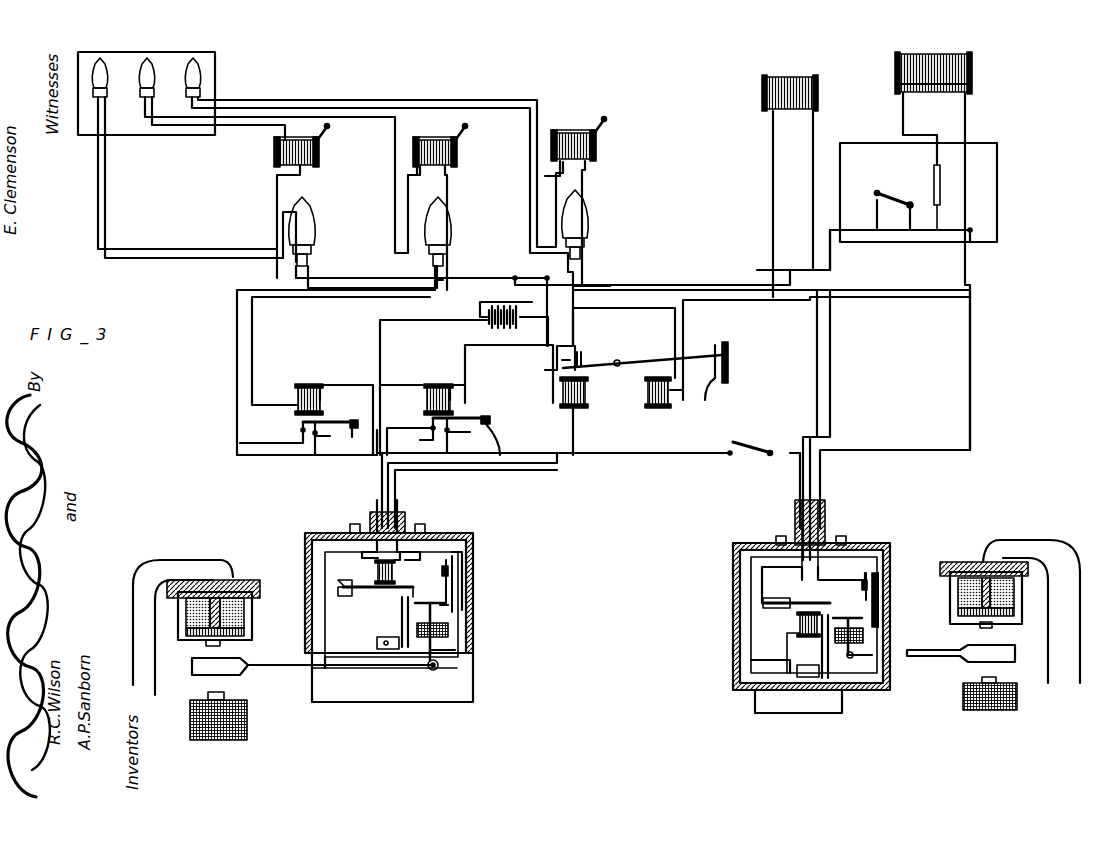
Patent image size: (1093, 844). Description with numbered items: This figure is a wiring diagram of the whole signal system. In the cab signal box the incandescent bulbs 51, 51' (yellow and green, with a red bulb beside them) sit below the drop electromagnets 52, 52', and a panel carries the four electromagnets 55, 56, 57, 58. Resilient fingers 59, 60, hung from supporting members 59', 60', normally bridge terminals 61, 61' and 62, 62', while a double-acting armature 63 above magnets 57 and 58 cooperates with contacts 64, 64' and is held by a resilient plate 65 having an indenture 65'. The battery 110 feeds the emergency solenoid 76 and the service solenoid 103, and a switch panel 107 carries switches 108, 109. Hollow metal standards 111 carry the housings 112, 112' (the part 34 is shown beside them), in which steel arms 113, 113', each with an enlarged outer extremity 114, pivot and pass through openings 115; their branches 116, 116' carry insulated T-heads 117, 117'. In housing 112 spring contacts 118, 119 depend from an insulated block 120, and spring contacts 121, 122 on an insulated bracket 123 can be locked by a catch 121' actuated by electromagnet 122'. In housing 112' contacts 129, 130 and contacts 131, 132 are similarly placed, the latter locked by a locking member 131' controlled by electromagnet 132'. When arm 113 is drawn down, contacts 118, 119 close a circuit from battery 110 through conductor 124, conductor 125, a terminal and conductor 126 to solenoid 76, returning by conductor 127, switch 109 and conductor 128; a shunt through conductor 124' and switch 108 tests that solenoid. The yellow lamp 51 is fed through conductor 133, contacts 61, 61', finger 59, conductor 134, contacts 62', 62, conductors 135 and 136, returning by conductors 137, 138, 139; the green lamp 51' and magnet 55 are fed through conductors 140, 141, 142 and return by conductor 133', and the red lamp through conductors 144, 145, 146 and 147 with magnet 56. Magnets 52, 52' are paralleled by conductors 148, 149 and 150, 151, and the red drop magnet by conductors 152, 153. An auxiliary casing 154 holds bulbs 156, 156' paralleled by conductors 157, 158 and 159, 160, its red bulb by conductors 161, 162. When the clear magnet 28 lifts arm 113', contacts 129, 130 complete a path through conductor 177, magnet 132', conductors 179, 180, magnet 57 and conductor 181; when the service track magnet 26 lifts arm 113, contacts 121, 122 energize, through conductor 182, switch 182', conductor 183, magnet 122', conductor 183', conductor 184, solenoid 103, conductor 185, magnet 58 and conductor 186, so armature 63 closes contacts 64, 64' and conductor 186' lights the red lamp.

The service track magnet 26 is at (1030, 578).
The clear magnet 28 is at (178, 612).
The housing 34 is at (172, 562).
The incandescent bulb 51 is at (329, 226).
The incandescent bulb 51' is at (463, 226).
The electromagnet 52 is at (302, 174).
The electromagnet 52' is at (444, 119).
The electromagnet 55 is at (296, 394).
The electromagnet 56 is at (426, 394).
The electromagnet 57 is at (574, 410).
The electromagnet 58 is at (656, 410).
The resilient finger 59 is at (330, 410).
The supporting member 59' is at (348, 440).
The resilient finger 60 is at (466, 410).
The supporting member 60' is at (503, 460).
The terminal 61 is at (272, 456).
The terminal 61' is at (310, 459).
The terminal 62 is at (411, 430).
The terminal 62' is at (461, 435).
The double-acting armature 63 is at (694, 355).
The contact 64 is at (549, 384).
The contact 64' is at (599, 345).
The resilient plate 65 is at (708, 397).
The indenture 65' is at (744, 350).
The solenoid 76 is at (928, 54).
The second solenoid 103 is at (790, 78).
The switch panel 107 is at (986, 182).
The switch 108 is at (874, 190).
The switch 109 is at (932, 178).
The battery 110 is at (502, 340).
The hollow metal standard 111 is at (400, 514).
The annular metallic housing 112 is at (845, 545).
The annular metallic housing 112' is at (436, 542).
The right angularly shaped steel arm 113 is at (940, 683).
The right angularly shaped steel arm 113' is at (312, 684).
The enlarged outer extremity 114 is at (200, 698).
The opening 115 is at (428, 674).
The branch 116 is at (848, 683).
The branch 116' is at (471, 631).
The insulated T-head 117 is at (897, 592).
The insulated T-head 117' is at (486, 585).
The spring contact 118 is at (900, 550).
The spring contact 119 is at (884, 590).
The insulated block 120 is at (884, 570).
The spring contact 121 is at (764, 684).
The catch 121' is at (750, 598).
The spring contact 122 is at (788, 684).
The electromagnet 122' is at (734, 631).
The insulated bracket 123 is at (810, 678).
The conductor 124 is at (585, 393).
The conductor 124' is at (688, 257).
The conductor 125 is at (972, 372).
The conductor 126 is at (968, 126).
The conductor 127 is at (902, 112).
The conductor 128 is at (596, 294).
The contact 129 is at (458, 570).
The contact 130 is at (458, 584).
The contact 131 is at (374, 601).
The locking member 131' is at (303, 606).
The contact 132 is at (374, 623).
The electromagnet 132' is at (316, 563).
The conductor 133 is at (281, 372).
The conductor 133' is at (479, 246).
The conductor 134 is at (360, 458).
The conductor 135 is at (390, 430).
The conductor 136 is at (378, 322).
The conductor 137 is at (340, 261).
The conductor 138 is at (528, 282).
The conductor 139 is at (545, 330).
The conductor 140 is at (254, 332).
The conductor 141 is at (322, 380).
The conductor 142 is at (325, 644).
The conductor 144 is at (586, 252).
The conductor 145 is at (464, 358).
The conductor 146 is at (380, 382).
The conductor 147 is at (588, 272).
The conductor 148 is at (274, 190).
The conductor 149 is at (281, 214).
The conductor 150 is at (452, 170).
The conductor 151 is at (408, 184).
The conductor 152 is at (590, 166).
The conductor 153 is at (544, 182).
The casing 154 is at (142, 140).
The incandescent bulb 156 is at (111, 60).
The incandescent bulb 156' is at (167, 60).
The conductor 157 is at (97, 172).
The conductor 158 is at (105, 182).
The conductor 159 is at (226, 126).
The conductor 160 is at (248, 124).
The conductor 161 is at (356, 108).
The conductor 162 is at (395, 100).
The conductor 177 is at (305, 540).
The conductor 179 is at (462, 548).
The conductor 180 is at (452, 466).
The conductor 181 is at (552, 362).
The conductor 182 is at (554, 489).
The switch 182' is at (741, 462).
The conductor 183 is at (776, 490).
The conductor 183' is at (732, 685).
The conductor 184 is at (738, 430).
The conductor 185 is at (771, 160).
The conductor 186 is at (705, 350).
The conductor 186' is at (624, 338).